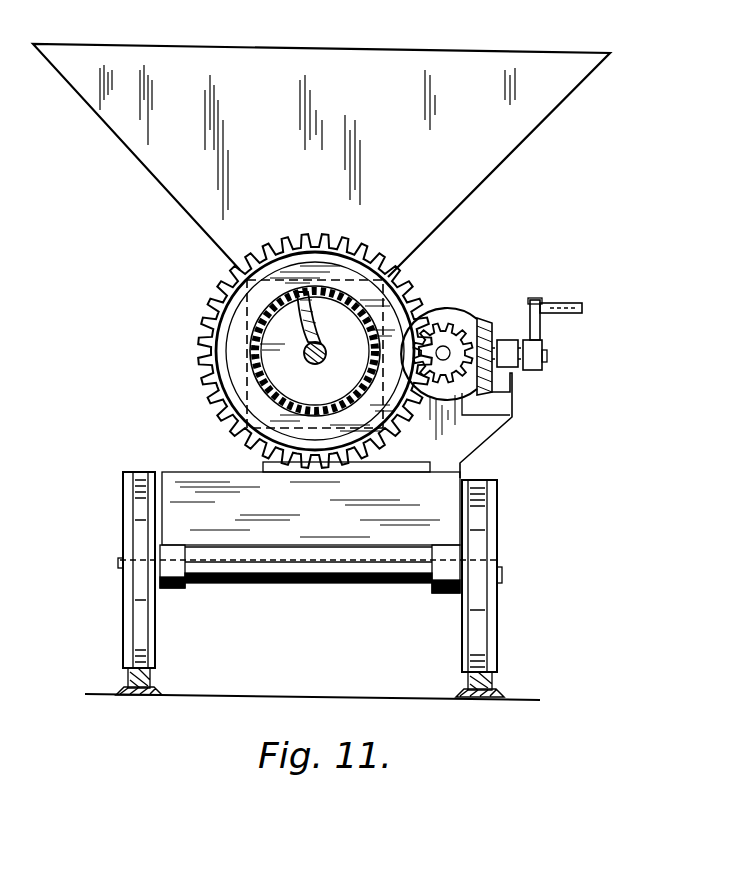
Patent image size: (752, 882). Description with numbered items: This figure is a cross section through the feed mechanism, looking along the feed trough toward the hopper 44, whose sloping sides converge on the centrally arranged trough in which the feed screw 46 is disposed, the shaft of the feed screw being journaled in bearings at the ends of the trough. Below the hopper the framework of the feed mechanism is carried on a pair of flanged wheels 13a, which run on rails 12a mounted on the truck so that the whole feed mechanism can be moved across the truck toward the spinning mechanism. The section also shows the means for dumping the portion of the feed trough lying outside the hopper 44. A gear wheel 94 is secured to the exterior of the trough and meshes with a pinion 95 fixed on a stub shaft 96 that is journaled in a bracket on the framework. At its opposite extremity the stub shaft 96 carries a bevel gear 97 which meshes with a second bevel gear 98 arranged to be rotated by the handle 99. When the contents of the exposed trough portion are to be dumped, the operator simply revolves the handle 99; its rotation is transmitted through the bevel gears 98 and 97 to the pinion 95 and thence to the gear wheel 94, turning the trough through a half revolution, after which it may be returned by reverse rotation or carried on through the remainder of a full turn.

The hopper 44 is at (532, 122).
The gear wheel 94 is at (202, 343).
The feed screw 46 is at (313, 322).
The pinion 95 is at (472, 333).
The bevel gear 97 is at (448, 322).
The bevel gear 98 is at (487, 321).
The handle 99 is at (567, 302).
The stub shaft 96 is at (437, 390).
The flanged wheels 13a is at (447, 622).
The rails 12a is at (487, 686).